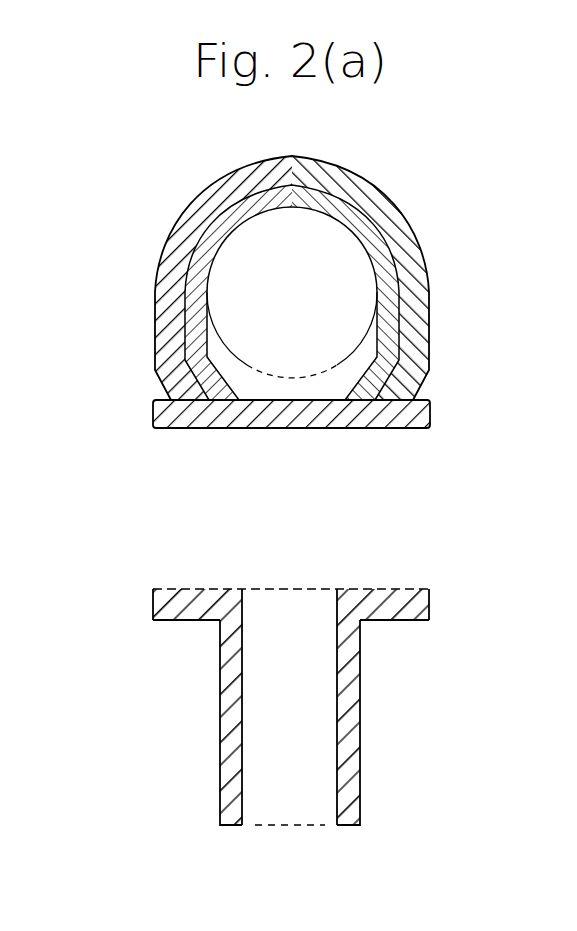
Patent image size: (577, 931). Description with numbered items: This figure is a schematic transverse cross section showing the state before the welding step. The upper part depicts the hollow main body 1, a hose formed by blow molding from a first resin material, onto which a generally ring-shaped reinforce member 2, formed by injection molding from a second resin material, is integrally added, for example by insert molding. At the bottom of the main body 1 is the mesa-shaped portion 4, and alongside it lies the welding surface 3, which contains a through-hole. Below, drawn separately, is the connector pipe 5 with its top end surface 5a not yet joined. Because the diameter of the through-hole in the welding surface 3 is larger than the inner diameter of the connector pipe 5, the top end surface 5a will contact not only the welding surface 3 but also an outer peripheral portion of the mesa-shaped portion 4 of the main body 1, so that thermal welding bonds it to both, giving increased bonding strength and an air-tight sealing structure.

The main body 1 is at (183, 215).
The reinforce member 2 is at (155, 313).
The welding surface 3 is at (190, 430).
The mesa-shaped portion 4 is at (310, 430).
The connector pipe 5 is at (363, 715).
The top end surface 5a is at (188, 588).